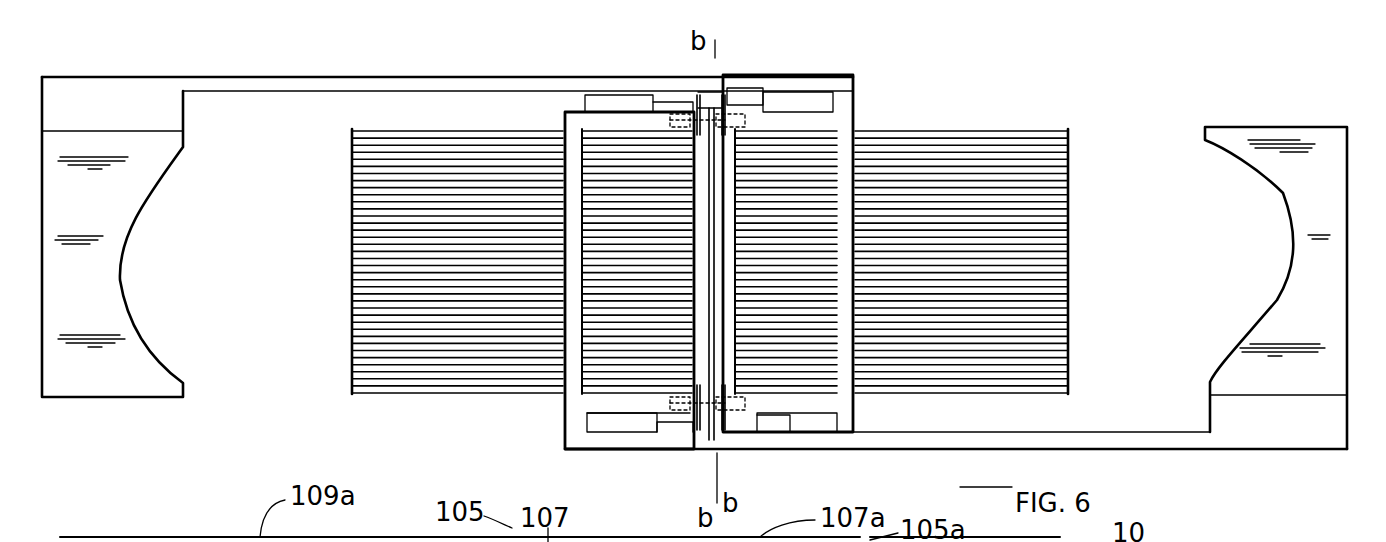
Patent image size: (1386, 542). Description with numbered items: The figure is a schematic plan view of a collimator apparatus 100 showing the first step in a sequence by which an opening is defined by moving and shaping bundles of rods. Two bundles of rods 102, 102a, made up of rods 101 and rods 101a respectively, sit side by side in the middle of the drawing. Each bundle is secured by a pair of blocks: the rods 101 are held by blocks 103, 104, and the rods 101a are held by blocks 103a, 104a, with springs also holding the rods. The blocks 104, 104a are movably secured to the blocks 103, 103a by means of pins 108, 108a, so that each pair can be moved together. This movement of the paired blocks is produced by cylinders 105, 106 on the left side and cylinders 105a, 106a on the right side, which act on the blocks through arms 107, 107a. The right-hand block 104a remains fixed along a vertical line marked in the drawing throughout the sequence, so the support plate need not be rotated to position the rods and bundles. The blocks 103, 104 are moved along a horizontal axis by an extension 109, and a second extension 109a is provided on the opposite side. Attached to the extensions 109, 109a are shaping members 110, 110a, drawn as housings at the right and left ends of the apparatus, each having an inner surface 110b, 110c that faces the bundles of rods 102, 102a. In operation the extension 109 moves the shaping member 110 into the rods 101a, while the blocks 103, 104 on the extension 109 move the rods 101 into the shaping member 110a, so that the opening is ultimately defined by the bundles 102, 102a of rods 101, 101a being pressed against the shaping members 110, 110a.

The collimator apparatus 100 is at (966, 128).
The rods 101 is at (428, 385).
The rods 101a is at (1028, 388).
The bundle of rods 102 is at (345, 130).
The bundle of rods 102a is at (1083, 388).
The block 103 is at (577, 405).
The block 103a is at (858, 374).
The block 104 is at (708, 452).
The block 104a is at (728, 445).
The cylinder 105 is at (597, 107).
The cylinder 105a is at (823, 102).
The cylinder 106 is at (612, 432).
The cylinder 106a is at (843, 425).
The arm 107 is at (662, 92).
The arm 107a is at (742, 90).
The pin 108 is at (694, 93).
The pin 108a is at (742, 121).
The extension 109 is at (980, 450).
The extension 109a is at (293, 83).
The shaping member 110 is at (1322, 320).
The shaping member 110a is at (93, 297).
The inner surface 110b is at (1272, 192).
The inner surface 110c is at (145, 227).